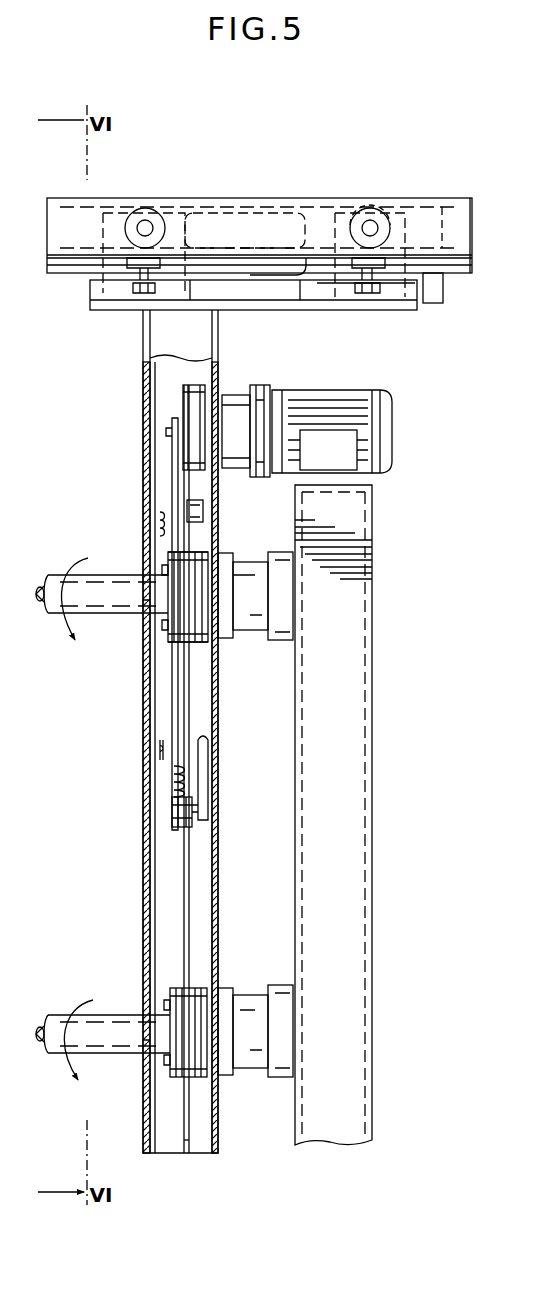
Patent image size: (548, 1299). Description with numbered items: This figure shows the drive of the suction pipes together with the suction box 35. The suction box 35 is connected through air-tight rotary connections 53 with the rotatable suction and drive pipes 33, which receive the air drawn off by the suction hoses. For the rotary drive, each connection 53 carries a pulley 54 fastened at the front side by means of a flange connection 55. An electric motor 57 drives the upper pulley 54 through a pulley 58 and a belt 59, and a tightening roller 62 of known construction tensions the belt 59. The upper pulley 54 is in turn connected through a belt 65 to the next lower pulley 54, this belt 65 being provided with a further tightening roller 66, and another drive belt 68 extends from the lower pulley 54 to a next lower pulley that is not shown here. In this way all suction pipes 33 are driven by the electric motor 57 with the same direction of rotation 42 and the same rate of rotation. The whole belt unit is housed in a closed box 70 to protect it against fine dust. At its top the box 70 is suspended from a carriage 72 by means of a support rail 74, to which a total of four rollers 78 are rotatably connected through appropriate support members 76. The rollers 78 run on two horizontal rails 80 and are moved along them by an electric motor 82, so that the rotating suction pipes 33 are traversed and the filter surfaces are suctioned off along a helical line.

The suction and drive pipe 33 is at (108, 590).
The suction box 35 is at (350, 688).
The direction of rotation 42 is at (76, 548).
The rotary connection 53 is at (254, 640).
The pulley 54 is at (165, 556).
The flange connection 55 is at (145, 625).
The electric motor 57 is at (360, 390).
The pulley 58 is at (190, 383).
The belt 59 is at (193, 533).
The tightening roller 62 is at (168, 463).
The belt 65 is at (188, 718).
The tightening roller 66 is at (173, 824).
The drive belt 68 is at (210, 1120).
The closed box 70 is at (143, 372).
The carriage 72 is at (258, 190).
The support rail 74 is at (297, 310).
The support member 76 is at (112, 212).
The roller 78 is at (155, 210).
The horizontal rail 80 is at (466, 198).
The electric motor 82 is at (203, 222).